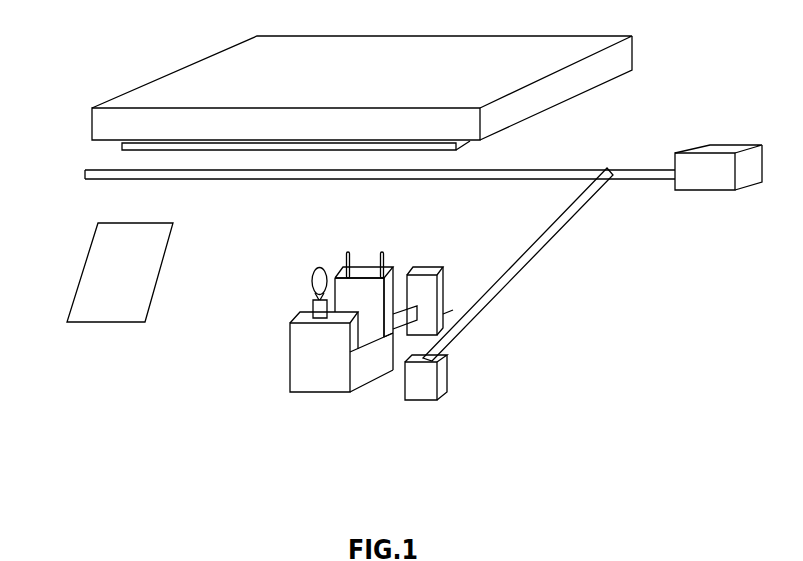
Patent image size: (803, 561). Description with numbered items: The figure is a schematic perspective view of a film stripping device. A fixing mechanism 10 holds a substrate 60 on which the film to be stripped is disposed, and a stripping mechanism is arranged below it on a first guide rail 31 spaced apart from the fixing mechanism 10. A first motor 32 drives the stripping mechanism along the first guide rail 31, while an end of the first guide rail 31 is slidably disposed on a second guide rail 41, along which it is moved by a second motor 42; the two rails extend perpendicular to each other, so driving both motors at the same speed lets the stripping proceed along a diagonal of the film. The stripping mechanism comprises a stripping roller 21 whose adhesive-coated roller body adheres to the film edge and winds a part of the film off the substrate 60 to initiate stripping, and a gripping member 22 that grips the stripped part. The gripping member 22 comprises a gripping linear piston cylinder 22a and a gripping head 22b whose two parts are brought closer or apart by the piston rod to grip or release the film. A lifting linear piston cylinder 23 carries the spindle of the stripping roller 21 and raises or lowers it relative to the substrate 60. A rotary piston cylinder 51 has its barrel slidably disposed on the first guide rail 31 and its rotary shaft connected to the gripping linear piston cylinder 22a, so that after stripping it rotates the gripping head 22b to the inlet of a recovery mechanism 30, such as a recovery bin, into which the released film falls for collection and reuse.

The fixing mechanism 10 is at (596, 30).
The substrate 60 is at (122, 150).
The second guide rail 41 is at (115, 178).
The second motor 42 is at (708, 192).
The recovery mechanism 30 is at (92, 323).
The first guide rail 31 is at (530, 260).
The first motor 32 is at (417, 387).
The rotary piston cylinder 51 is at (429, 266).
The lifting linear piston cylinder 23 is at (290, 355).
The gripping member 22 is at (315, 228).
The gripping linear piston cylinder 22a is at (338, 270).
The gripping head 22b is at (366, 255).
The stripping roller 21 is at (307, 278).